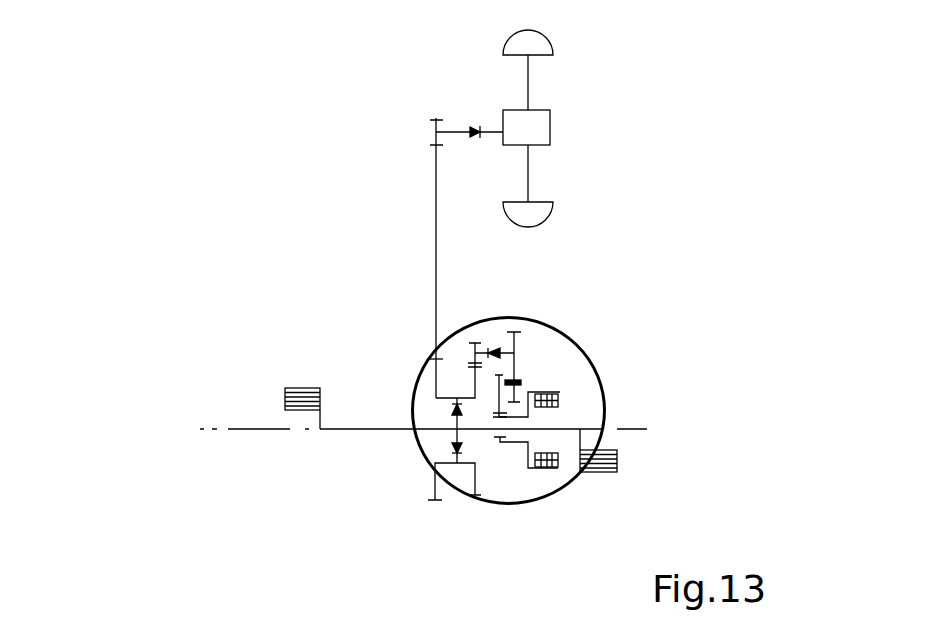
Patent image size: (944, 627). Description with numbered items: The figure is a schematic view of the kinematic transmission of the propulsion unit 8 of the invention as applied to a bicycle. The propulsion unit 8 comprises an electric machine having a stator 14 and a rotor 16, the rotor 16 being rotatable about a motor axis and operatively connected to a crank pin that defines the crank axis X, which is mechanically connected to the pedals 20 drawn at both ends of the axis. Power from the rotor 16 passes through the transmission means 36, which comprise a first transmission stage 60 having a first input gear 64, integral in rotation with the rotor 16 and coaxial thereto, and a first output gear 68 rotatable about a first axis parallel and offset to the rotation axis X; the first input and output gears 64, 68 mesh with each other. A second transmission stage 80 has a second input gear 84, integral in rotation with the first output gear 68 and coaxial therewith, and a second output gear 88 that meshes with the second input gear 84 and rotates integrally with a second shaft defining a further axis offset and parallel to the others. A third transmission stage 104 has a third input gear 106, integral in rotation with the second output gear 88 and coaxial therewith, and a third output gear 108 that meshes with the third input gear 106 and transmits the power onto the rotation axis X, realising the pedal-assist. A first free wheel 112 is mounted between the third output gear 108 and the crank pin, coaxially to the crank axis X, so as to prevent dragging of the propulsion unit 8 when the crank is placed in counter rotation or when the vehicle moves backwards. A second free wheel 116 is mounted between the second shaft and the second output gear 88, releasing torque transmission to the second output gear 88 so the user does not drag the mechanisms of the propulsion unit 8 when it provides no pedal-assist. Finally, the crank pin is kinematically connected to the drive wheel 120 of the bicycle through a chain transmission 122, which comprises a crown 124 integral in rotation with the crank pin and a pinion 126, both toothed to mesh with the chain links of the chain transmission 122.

The propulsion unit 8 is at (538, 319).
The stator 14 is at (545, 470).
The rotor 16 is at (570, 518).
The pedals 20 is at (284, 395).
The transmission means 36 is at (500, 446).
The first transmission stage 60 is at (522, 383).
The first input gear 64 is at (482, 524).
The first output gear 68 is at (629, 368).
The second transmission stage 80 is at (515, 345).
The second input gear 84 is at (522, 397).
The second output gear 88 is at (618, 331).
The third transmission stage 104 is at (468, 344).
The third input gear 106 is at (373, 337).
The third output gear 108 is at (475, 481).
The first free wheel 112 is at (455, 433).
The second free wheel 116 is at (497, 350).
The drive wheel 120 is at (550, 128).
The chain transmission 122 is at (434, 230).
The crown 124 is at (433, 387).
The pinion 126 is at (433, 132).
The crank axis X is at (198, 430).